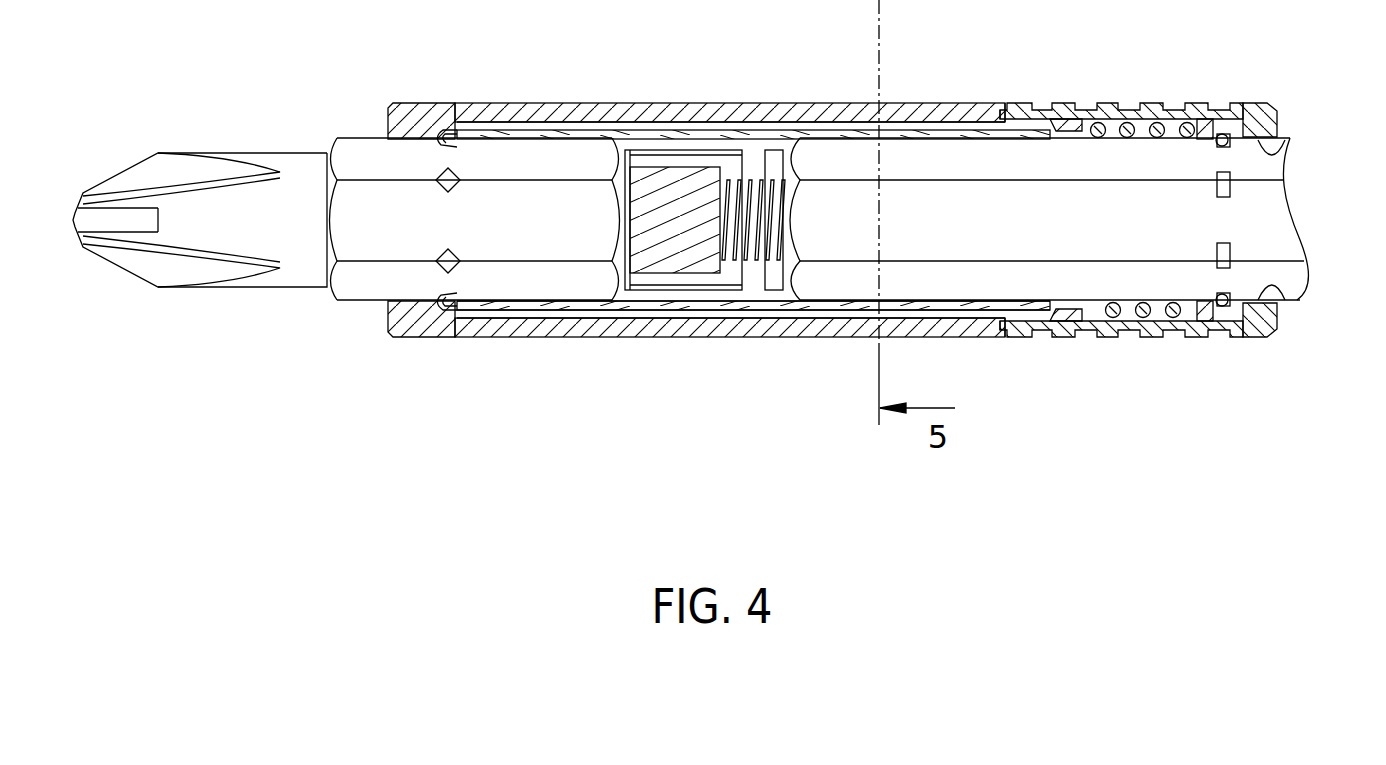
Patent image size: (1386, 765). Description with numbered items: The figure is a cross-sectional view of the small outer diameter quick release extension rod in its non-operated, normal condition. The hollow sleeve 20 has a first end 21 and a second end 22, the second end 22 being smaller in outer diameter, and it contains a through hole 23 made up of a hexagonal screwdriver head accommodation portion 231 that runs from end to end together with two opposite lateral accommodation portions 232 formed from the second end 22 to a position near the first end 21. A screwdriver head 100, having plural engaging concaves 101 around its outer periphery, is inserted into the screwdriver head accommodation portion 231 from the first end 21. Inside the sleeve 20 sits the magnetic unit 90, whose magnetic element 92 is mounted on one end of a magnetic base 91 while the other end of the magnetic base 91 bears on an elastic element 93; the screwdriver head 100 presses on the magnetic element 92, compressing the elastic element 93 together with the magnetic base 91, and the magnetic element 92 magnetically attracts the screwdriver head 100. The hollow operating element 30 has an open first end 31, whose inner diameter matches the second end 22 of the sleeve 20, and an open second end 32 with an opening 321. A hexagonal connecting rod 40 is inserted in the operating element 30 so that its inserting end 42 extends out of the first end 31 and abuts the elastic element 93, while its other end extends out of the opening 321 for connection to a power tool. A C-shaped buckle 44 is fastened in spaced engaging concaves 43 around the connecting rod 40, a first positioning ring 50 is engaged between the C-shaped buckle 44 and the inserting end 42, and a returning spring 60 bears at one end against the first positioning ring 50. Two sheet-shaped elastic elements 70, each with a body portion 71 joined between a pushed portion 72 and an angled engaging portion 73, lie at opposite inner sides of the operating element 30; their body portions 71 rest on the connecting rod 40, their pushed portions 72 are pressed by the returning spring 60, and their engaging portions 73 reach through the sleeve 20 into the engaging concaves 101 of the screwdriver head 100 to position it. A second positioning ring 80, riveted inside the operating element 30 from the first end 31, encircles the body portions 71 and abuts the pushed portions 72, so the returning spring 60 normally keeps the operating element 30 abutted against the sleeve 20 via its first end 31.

The screwdriver head 100 is at (257, 138).
The first end 21 is at (475, 171).
The engaging concaves 101 is at (448, 176).
The sleeve 20 is at (721, 209).
The second end 22 is at (1043, 117).
The through hole 23 is at (477, 323).
The screwdriver head accommodation portion 231 is at (661, 298).
The lateral accommodation portion 232 is at (566, 317).
The elastic elements 70 is at (712, 266).
The body portion 71 is at (853, 307).
The engaging portion 73 is at (445, 308).
The magnetic unit 90 is at (672, 159).
The magnetic element 92 is at (656, 185).
The magnetic base 91 is at (752, 152).
The elastic element 93 is at (773, 185).
The connecting rod 40 is at (1023, 277).
The inserting end 42 is at (785, 270).
The engaging concaves 43 is at (1224, 260).
The C-shaped buckle 44 is at (1225, 307).
The operating element 30 is at (1159, 211).
The first end 31 is at (1014, 104).
The second end 32 is at (1284, 118).
The opening 321 is at (1284, 158).
The returning spring 60 is at (1130, 122).
The first positioning ring 50 is at (1203, 119).
The pushed portion 72 is at (1078, 306).
The second positioning ring 80 is at (1072, 322).